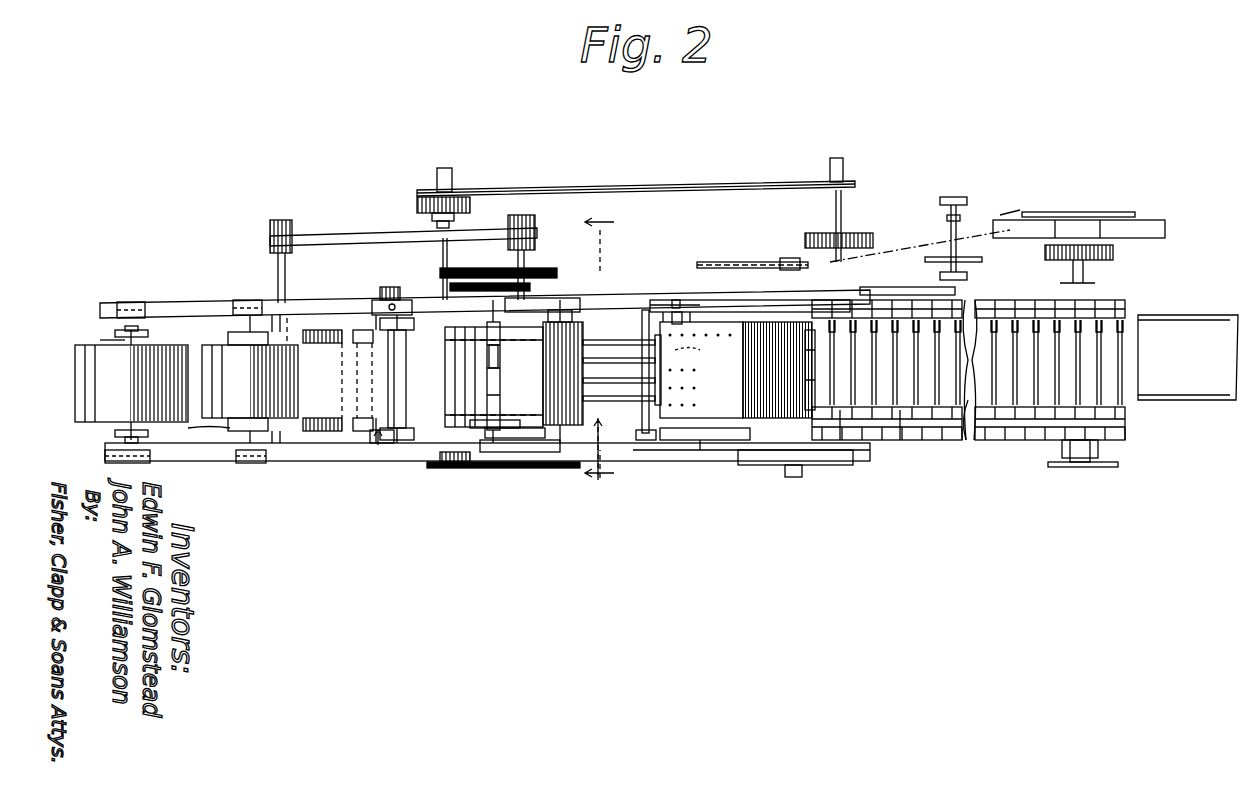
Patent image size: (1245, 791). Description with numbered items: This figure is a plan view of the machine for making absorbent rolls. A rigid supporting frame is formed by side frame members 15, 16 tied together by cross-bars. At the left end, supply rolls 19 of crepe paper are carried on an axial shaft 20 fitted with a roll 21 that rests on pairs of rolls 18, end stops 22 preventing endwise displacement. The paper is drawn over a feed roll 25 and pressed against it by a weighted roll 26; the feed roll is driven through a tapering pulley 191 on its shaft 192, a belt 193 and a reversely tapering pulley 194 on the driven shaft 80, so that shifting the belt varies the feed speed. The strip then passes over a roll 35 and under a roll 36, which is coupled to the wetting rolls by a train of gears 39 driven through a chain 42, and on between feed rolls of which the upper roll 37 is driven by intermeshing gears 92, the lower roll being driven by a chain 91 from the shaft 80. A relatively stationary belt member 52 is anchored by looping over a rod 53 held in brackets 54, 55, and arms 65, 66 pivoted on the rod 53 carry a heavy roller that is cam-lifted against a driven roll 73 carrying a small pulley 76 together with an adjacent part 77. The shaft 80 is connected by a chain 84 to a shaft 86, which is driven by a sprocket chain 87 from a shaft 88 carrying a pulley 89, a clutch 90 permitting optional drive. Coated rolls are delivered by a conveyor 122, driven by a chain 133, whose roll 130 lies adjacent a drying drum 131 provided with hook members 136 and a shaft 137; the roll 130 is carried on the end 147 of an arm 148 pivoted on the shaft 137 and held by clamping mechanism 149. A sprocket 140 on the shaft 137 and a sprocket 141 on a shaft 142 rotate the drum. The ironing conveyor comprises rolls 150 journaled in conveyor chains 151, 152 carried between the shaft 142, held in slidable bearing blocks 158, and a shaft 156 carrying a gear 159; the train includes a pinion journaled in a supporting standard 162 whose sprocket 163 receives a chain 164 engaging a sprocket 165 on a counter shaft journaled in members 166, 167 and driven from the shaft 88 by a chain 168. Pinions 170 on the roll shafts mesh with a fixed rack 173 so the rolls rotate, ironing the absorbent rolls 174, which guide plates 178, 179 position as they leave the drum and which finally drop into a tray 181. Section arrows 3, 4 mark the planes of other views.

The side frame member 15 is at (330, 464).
The side frame member 16 is at (325, 298).
The roll 18 is at (150, 327).
The roll of crepe paper 19 is at (131, 385).
The axial shaft 20 is at (230, 333).
The roll 21 is at (100, 340).
The end stop 22 is at (118, 436).
The feed roll 25 is at (298, 318).
The weighted roll 26 is at (250, 379).
The roll 35 is at (353, 332).
The roll 36 is at (410, 379).
The feed roll 37 is at (445, 392).
The train of gears 39 is at (382, 292).
The chain 42 is at (398, 300).
The belt member 52 is at (583, 332).
The rod 53 is at (572, 316).
The bracket 54 is at (540, 452).
The bracket 55 is at (560, 298).
The arm 65 is at (440, 430).
The arm 66 is at (440, 322).
The driven roll 73 is at (500, 350).
The small pulley 76 is at (500, 420).
The sleeve 77 is at (500, 370).
The shaft 80 is at (524, 260).
The chain 84 is at (438, 250).
The shaft 86 is at (483, 268).
The sprocket chain 87 is at (612, 187).
The shaft 88 is at (836, 211).
The pulley 89 is at (865, 233).
The clutch means 90 is at (415, 205).
The chain 91 is at (488, 283).
The intermeshing gears 92 is at (435, 465).
The conveyor 122 is at (620, 390).
The roll 130 is at (645, 310).
The drying drum 131 is at (699, 370).
The chain 133 is at (500, 468).
The hook member 136 is at (705, 349).
The shaft 137 is at (745, 306).
The sprocket 140 is at (712, 262).
The sprocket 141 is at (788, 258).
The shaft 142 is at (792, 477).
The end of arm 147 is at (660, 300).
The arm 148 is at (695, 440).
The clamping mechanism 149 is at (676, 300).
The roll 150 is at (880, 415).
The conveyor chain 151 is at (935, 440).
The conveyor chain 152 is at (1010, 300).
The shaft 156 is at (1085, 468).
The bearing block 158 is at (780, 470).
The gear 159 is at (1113, 252).
The supporting standard 162 is at (1133, 228).
The sprocket 163 is at (1085, 212).
The chain 164 is at (1010, 212).
The sprocket 165 is at (951, 215).
The sprocket 166 is at (974, 196).
The sprocket 167 is at (967, 275).
The chain 168 is at (906, 258).
The pinion gear 170 is at (878, 290).
The rack 173 is at (918, 287).
The absorbent roll 174 is at (968, 440).
The guide plate 178 is at (805, 405).
The guide plate 179 is at (760, 322).
The tray 181 is at (1182, 315).
The tapering pulley 191 is at (270, 228).
The shaft 192 is at (278, 270).
The belt 193 is at (355, 233).
The reversely tapering pulley 194 is at (535, 222).
The section line 3 is at (489, 440).
The section line 4 is at (599, 347).